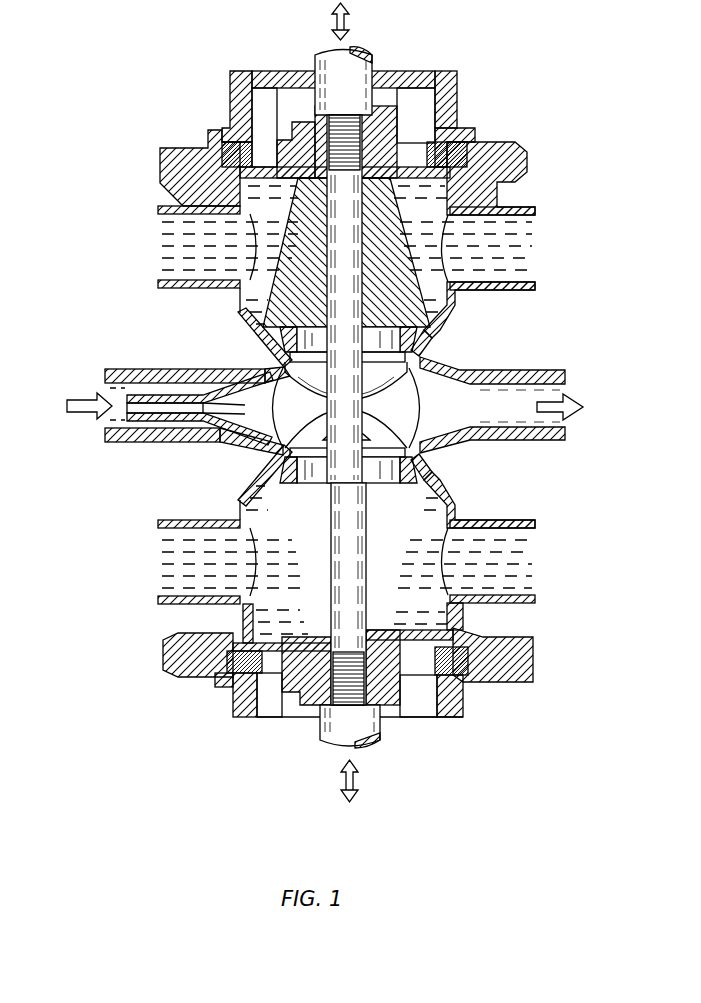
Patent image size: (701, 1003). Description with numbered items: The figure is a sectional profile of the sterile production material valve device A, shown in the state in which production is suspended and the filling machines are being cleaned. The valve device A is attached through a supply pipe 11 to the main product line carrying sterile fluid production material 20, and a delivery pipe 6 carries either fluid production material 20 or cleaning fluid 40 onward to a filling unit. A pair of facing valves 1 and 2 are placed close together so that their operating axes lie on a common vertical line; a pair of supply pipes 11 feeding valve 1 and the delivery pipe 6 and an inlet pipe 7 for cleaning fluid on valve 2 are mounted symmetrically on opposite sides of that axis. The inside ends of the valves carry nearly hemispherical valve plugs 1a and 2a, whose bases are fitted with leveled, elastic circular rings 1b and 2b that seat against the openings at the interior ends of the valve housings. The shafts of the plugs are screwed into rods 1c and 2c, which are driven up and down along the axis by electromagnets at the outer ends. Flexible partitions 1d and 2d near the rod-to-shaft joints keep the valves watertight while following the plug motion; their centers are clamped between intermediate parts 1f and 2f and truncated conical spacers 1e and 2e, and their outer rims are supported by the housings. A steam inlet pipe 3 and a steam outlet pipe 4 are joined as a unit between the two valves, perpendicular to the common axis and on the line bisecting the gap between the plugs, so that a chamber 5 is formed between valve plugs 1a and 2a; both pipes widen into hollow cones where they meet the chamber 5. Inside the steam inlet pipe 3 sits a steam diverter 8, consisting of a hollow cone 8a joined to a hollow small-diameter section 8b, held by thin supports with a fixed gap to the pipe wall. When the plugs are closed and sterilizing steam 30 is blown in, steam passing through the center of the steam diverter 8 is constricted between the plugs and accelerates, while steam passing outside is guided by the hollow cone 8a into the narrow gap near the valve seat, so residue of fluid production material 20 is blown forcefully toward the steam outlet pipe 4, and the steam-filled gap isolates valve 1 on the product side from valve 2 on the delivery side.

The valve device A is at (212, 112).
The valve 1 is at (478, 118).
The valve plug 1a is at (443, 365).
The elastic circular ring 1b is at (425, 345).
The rod 1c is at (372, 70).
The flexible partition 1d is at (427, 140).
The spacer 1e is at (293, 283).
The intermediate part 1f is at (296, 130).
The supply pipe 11 is at (185, 178).
The fluid production material 20 is at (165, 232).
The steam inlet pipe 3 is at (168, 372).
The steam diverter 8 is at (255, 378).
The hollow cone 8a is at (214, 423).
The hollow small-diameter section 8b is at (147, 420).
The chamber 5 is at (263, 423).
The sterilizing steam 30 is at (88, 395).
The steam outlet pipe 4 is at (513, 370).
The valve plug 2a is at (437, 448).
The elastic circular ring 2b is at (453, 493).
The spacer 2e is at (280, 500).
The delivery pipe 6 is at (160, 520).
The cleaning fluid 40 is at (527, 553).
The inlet pipe 7 is at (513, 607).
The valve 2 is at (222, 698).
The flexible partition 2d is at (270, 655).
The intermediate part 2f is at (392, 690).
The rod 2c is at (380, 725).